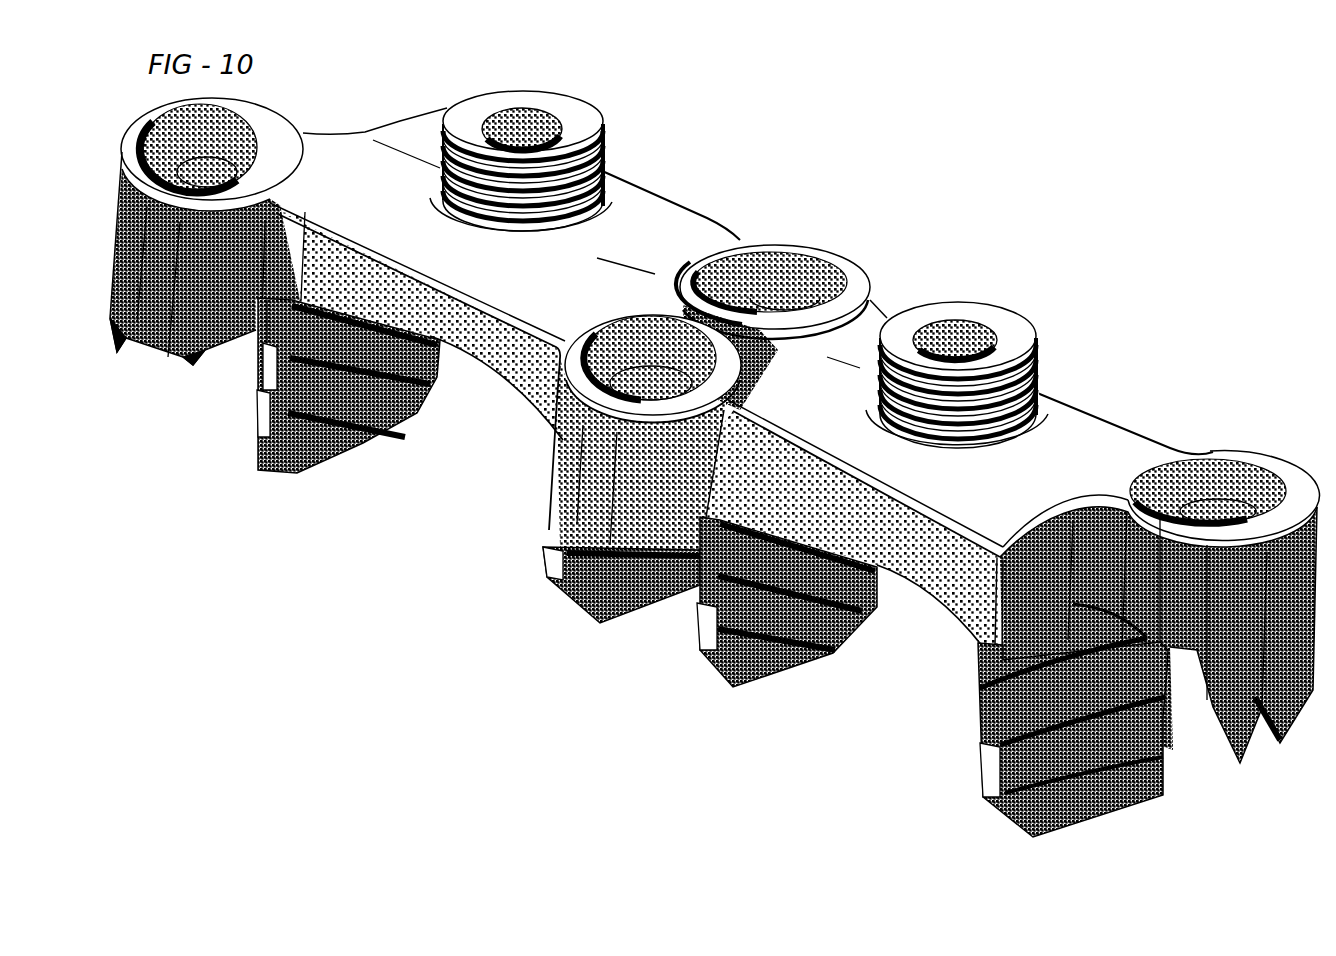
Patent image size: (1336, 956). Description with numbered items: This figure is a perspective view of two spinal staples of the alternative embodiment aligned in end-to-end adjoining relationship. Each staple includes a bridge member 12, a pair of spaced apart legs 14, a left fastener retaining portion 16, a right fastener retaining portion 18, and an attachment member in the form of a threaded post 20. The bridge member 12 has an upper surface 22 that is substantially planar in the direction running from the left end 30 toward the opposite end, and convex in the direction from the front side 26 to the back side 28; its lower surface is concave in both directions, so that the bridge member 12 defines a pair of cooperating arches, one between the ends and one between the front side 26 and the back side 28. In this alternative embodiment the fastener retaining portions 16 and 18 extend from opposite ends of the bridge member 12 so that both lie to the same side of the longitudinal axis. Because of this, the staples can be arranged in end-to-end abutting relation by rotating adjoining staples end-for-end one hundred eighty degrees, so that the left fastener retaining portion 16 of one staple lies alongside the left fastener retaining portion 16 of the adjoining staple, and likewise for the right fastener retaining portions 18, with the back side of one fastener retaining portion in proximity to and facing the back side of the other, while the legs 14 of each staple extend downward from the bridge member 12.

The bridge member 12 is at (645, 190).
The legs 14 is at (358, 452).
The left fastener retaining portion 16 is at (245, 127).
The right fastener retaining portion 18 is at (830, 262).
The threaded post 20 is at (573, 115).
The upper surface 22 is at (720, 213).
The front side 26 is at (517, 393).
The back side 28 is at (952, 605).
The left end 30 is at (985, 690).